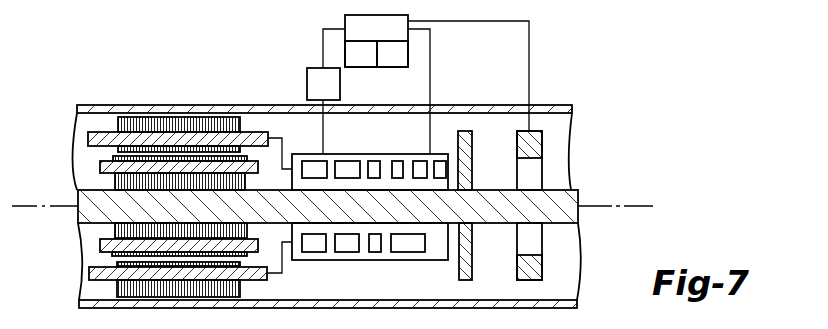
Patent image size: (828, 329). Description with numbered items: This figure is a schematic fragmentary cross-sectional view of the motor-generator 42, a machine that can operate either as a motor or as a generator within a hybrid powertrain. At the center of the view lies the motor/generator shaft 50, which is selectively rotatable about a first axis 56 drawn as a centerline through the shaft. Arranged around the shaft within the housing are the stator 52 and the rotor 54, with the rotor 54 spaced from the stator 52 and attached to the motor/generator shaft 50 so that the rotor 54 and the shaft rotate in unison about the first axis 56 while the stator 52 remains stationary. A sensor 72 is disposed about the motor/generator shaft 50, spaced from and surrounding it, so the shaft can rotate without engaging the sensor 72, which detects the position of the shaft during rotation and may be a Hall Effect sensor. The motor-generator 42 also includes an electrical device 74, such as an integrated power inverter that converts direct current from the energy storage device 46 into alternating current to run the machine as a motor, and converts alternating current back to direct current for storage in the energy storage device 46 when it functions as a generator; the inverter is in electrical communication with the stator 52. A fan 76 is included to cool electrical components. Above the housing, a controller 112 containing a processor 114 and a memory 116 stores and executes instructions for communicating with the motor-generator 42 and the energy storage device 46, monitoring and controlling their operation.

The motor-generator 42 is at (555, 105).
The energy storage device 46 is at (336, 94).
The motor/generator shaft 50 is at (580, 190).
The stator 52 is at (180, 122).
The rotor 54 is at (115, 232).
The first axis 56 is at (636, 205).
The sensor 72 is at (543, 145).
The electrical device 74 is at (301, 122).
The fan 76 is at (458, 270).
The controller 112 is at (407, 77).
The processor 114 is at (373, 62).
The memory 116 is at (404, 62).